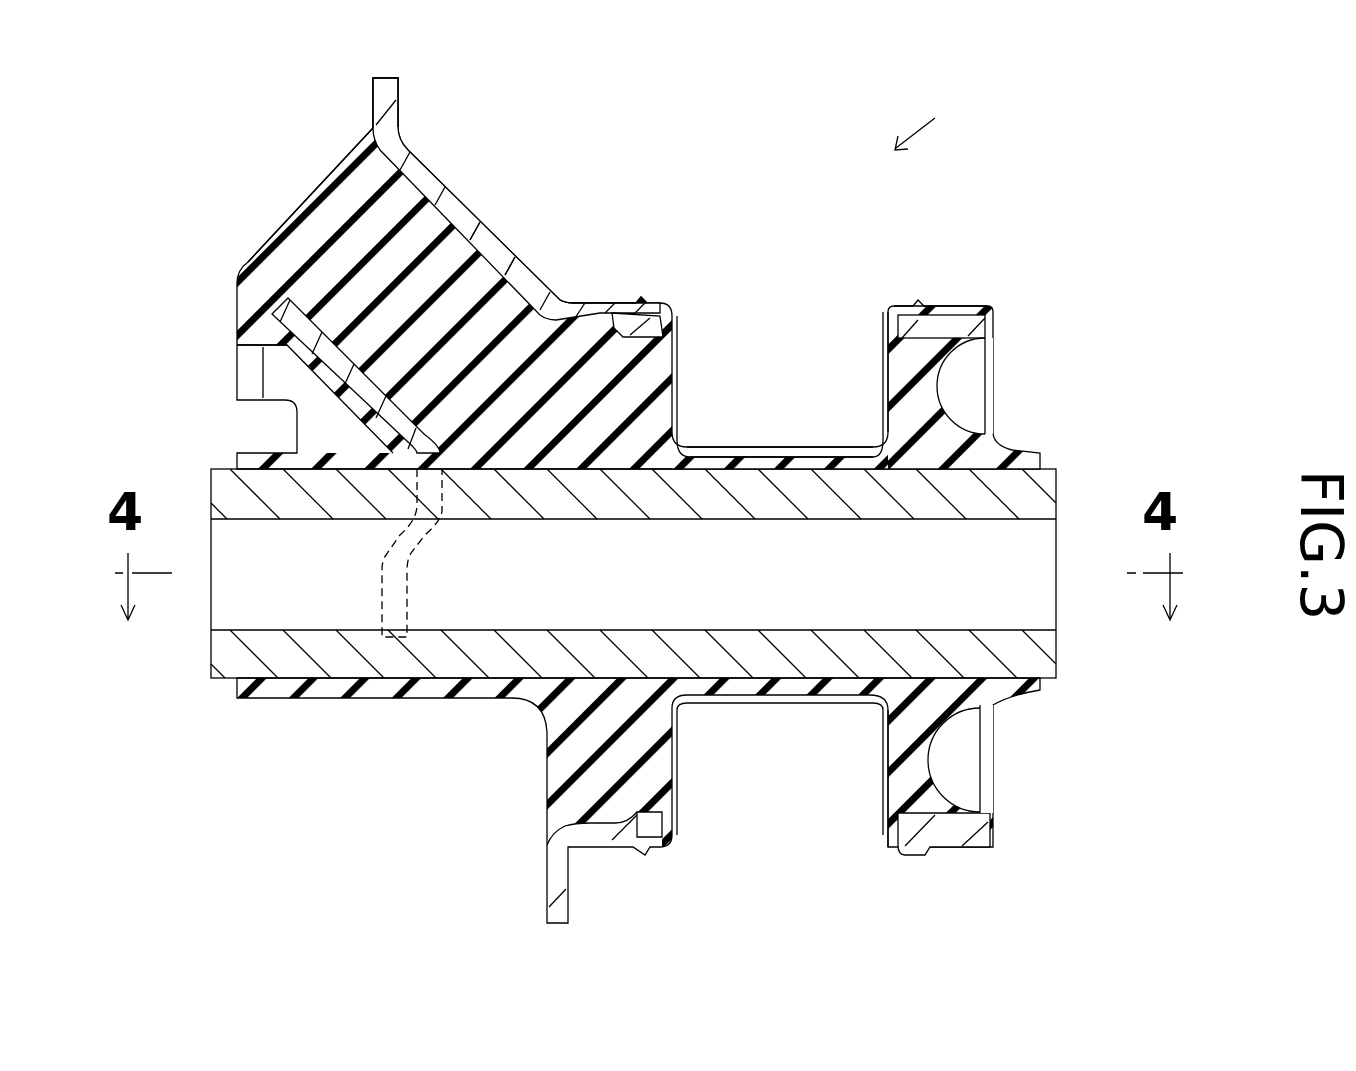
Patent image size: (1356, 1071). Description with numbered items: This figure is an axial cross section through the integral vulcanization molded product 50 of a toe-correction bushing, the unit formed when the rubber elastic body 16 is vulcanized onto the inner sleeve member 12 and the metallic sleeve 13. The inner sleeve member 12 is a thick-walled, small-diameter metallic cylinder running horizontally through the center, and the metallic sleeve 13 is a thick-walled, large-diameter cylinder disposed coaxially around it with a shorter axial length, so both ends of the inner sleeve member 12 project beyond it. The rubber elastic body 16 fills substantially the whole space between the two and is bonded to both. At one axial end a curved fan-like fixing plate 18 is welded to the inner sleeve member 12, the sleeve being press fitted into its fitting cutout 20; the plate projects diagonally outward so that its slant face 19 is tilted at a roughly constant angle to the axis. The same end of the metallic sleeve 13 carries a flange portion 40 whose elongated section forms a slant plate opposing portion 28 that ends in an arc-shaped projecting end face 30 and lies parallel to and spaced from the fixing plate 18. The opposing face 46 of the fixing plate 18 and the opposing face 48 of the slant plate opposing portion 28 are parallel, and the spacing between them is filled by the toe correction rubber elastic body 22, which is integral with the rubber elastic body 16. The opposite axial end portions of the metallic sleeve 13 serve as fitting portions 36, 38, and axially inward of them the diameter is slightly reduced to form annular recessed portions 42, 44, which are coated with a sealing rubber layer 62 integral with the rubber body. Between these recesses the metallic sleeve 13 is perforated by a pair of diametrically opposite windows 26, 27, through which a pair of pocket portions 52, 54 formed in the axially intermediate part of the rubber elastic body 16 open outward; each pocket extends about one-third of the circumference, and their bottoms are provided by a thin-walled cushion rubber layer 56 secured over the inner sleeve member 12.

The inner sleeve member 12 is at (1040, 490).
The metallic sleeve 13 is at (512, 262).
The rubber elastic body 16 is at (555, 345).
The fixing plate 18 is at (350, 372).
The slant face 19 is at (300, 345).
The fitting cutout 20 is at (382, 603).
The toe correction rubber elastic body 22 is at (410, 235).
The window 26 is at (888, 322).
The window 27 is at (893, 822).
The slant plate opposing portion 28 is at (478, 232).
The projecting end face 30 is at (393, 73).
The fitting portion 36 is at (970, 315).
The fitting portion 38 is at (605, 300).
The flange portion 40 is at (550, 893).
The annular recessed portion 42 is at (912, 824).
The annular recessed portion 44 is at (648, 320).
The opposing face 46 is at (303, 295).
The opposing face 48 is at (385, 175).
The integral vulcanization molded product 50 is at (931, 127).
The pocket portion 52 is at (757, 446).
The pocket portion 54 is at (757, 697).
The cushion rubber layer 56 is at (812, 460).
The sealing rubber layer 62 is at (637, 850).